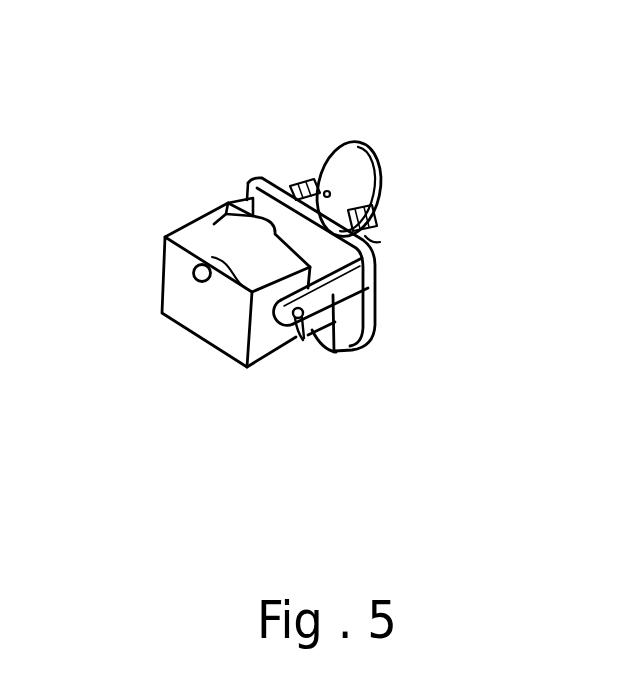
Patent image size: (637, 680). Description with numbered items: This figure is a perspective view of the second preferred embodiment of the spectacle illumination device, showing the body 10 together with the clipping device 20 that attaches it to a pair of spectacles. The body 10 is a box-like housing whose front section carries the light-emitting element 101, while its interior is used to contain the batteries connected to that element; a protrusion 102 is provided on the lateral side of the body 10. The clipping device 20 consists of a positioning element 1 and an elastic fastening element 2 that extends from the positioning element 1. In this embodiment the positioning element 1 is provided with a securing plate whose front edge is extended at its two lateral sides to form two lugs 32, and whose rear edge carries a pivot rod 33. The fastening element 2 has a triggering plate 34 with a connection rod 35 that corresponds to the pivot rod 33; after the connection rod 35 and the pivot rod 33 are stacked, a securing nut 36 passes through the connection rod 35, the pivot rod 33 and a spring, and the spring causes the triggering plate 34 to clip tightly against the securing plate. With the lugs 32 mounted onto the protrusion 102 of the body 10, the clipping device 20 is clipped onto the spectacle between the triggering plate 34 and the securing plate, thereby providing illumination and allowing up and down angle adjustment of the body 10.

The positioning element 1 is at (232, 176).
The elastic fastening element 2 is at (358, 128).
The body 10 is at (168, 218).
The clipping device 20 is at (248, 160).
The lugs 32 is at (333, 350).
The pivot rod 33 is at (293, 167).
The triggering plate 34 is at (373, 165).
The connection rod 35 is at (305, 168).
The securing nut 36 is at (380, 241).
The light-emitting element 101 is at (164, 291).
The protrusion 102 is at (300, 340).